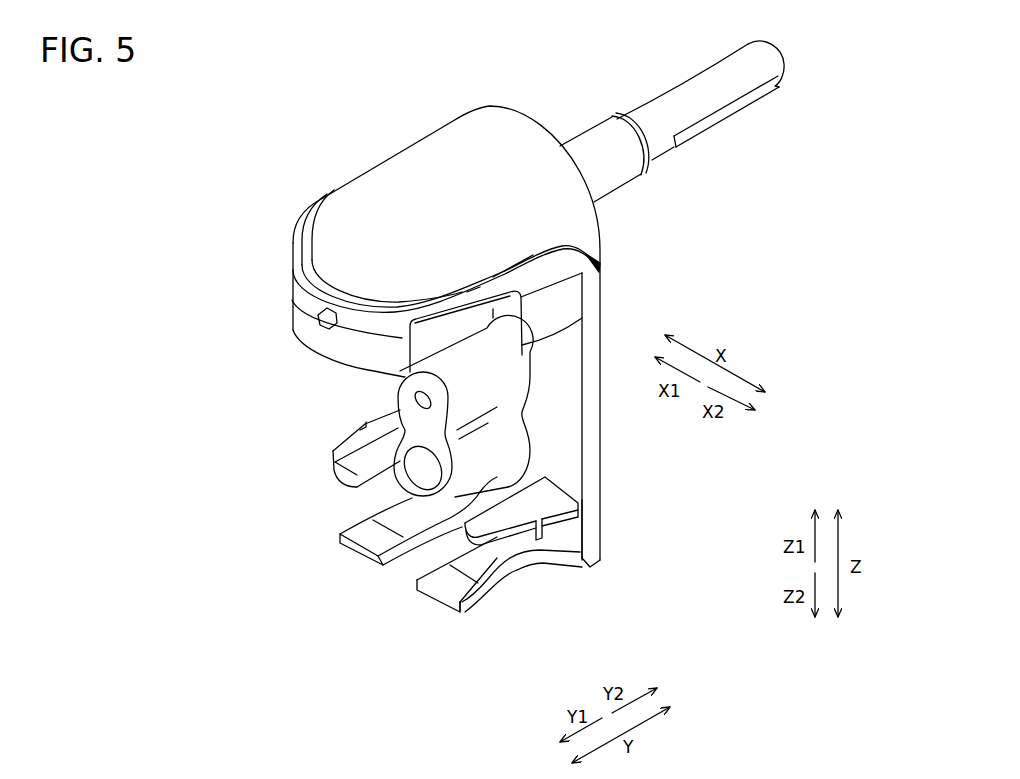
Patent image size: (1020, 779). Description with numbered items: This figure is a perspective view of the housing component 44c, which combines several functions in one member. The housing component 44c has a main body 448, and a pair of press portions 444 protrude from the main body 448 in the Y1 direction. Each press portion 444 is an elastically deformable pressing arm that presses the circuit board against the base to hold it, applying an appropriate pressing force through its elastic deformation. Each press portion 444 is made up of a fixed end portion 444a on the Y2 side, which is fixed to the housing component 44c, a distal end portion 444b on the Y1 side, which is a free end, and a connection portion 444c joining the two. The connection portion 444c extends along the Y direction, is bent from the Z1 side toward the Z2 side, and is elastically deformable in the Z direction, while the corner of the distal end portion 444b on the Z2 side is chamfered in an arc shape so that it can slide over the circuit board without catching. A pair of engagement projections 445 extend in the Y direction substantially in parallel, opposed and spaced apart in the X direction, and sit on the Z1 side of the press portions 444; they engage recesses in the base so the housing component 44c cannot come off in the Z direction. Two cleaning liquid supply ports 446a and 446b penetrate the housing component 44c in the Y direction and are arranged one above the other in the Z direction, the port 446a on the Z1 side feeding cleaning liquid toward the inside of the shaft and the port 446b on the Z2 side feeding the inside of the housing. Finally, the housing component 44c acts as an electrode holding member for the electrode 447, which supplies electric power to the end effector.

The housing component 44c is at (215, 142).
The electrode 447 is at (690, 145).
The cleaning liquid supply port 446a is at (408, 400).
The cleaning liquid supply port 446b is at (400, 457).
The engagement projection 445 is at (337, 467).
The press portion 444 is at (407, 575).
The fixed end portion 444a is at (600, 500).
The distal end portion 444b is at (467, 610).
The connection portion 444c is at (503, 570).
The main body 448 is at (600, 502).